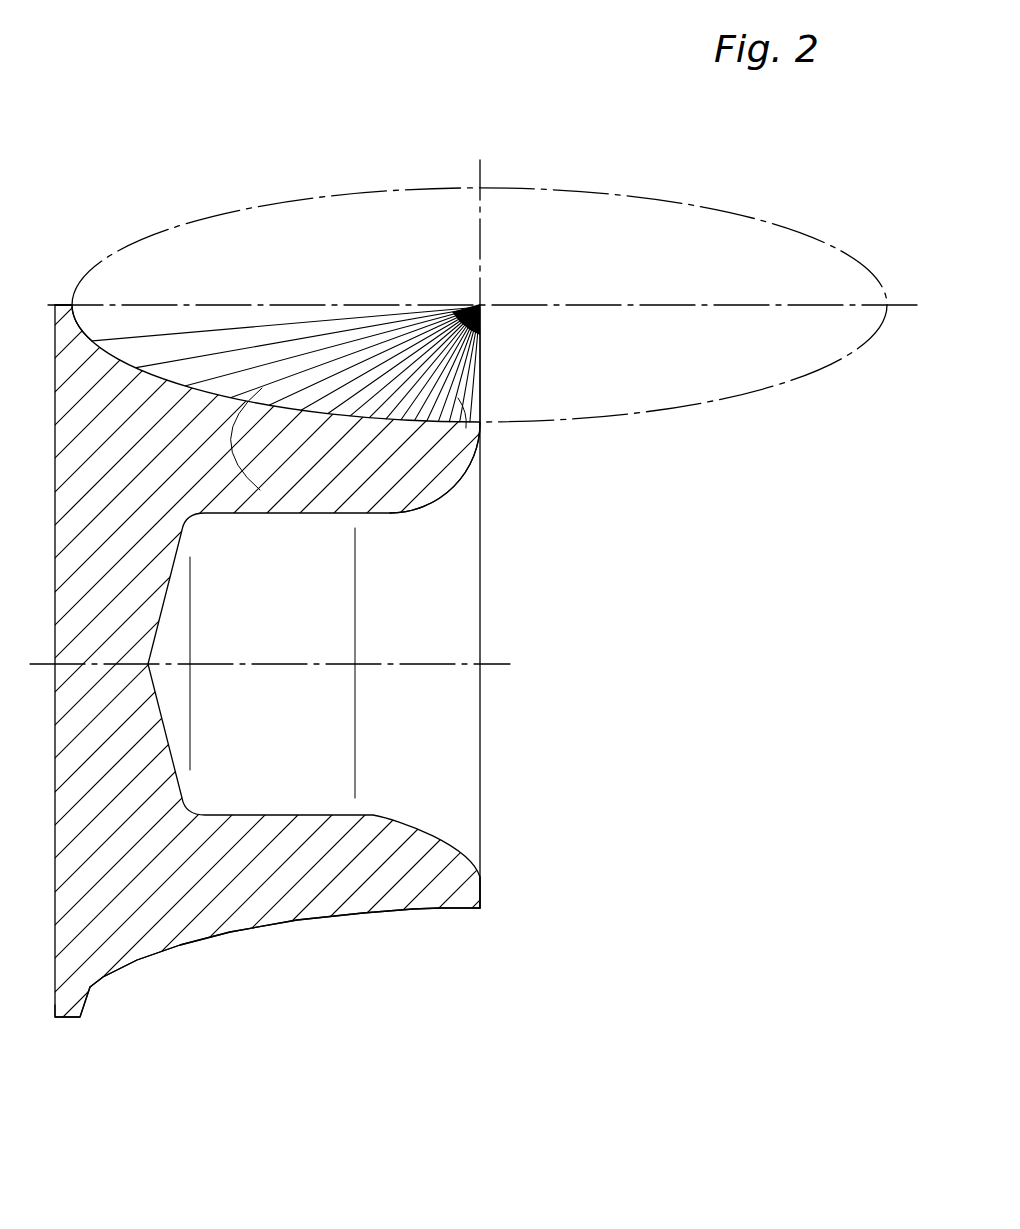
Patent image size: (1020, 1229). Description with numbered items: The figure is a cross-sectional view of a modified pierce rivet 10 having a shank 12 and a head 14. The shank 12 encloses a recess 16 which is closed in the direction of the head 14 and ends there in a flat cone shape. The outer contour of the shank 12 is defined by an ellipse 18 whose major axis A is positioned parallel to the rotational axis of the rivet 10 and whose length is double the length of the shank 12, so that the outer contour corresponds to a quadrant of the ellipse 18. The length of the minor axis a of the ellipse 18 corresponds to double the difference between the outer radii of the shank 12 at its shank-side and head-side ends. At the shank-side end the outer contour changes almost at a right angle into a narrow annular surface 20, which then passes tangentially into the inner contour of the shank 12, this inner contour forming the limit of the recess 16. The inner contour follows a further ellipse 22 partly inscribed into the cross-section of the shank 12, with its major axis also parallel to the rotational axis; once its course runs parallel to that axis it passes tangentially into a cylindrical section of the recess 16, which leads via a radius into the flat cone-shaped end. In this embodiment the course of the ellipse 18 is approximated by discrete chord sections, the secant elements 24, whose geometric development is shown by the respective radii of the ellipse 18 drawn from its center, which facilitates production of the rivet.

The pierce rivet 10 is at (578, 627).
The shank 12 is at (365, 890).
The head 14 is at (65, 1018).
The recess 16 is at (458, 562).
The ellipse 18 is at (660, 410).
The narrow annular surface 20 is at (482, 895).
The further ellipse 22 is at (278, 504).
The secant elements 24 is at (78, 332).
The minor axis a is at (482, 220).
The major axis A is at (584, 301).